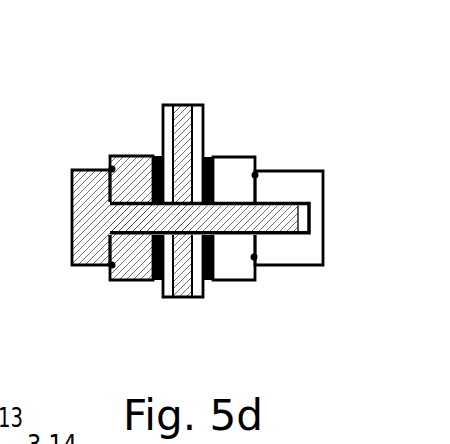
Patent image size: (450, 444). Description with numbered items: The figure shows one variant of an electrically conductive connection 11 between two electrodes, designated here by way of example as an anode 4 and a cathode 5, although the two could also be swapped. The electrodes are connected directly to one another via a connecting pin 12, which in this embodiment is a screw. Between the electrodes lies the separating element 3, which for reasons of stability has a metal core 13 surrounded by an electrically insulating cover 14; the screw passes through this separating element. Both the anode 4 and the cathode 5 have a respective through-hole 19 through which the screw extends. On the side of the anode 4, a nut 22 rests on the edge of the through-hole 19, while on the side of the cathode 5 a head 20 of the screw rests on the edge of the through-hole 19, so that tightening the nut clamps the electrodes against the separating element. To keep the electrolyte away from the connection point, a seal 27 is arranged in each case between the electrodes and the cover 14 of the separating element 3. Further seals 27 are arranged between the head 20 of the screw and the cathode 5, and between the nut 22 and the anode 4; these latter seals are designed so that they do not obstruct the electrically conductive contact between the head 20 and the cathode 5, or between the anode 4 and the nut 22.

The separating element 3 is at (183, 201).
The anode 4 is at (256, 174).
The cathode 5 is at (123, 166).
The electrically conductive connection 11 is at (233, 225).
The connecting pin 12 is at (204, 219).
The metal core 13 is at (182, 125).
The electrically insulating cover 14 is at (168, 112).
The through-hole 19 is at (141, 196).
The head of the screw 20 is at (82, 266).
The nut 22 is at (312, 247).
The seal 27 is at (112, 169).